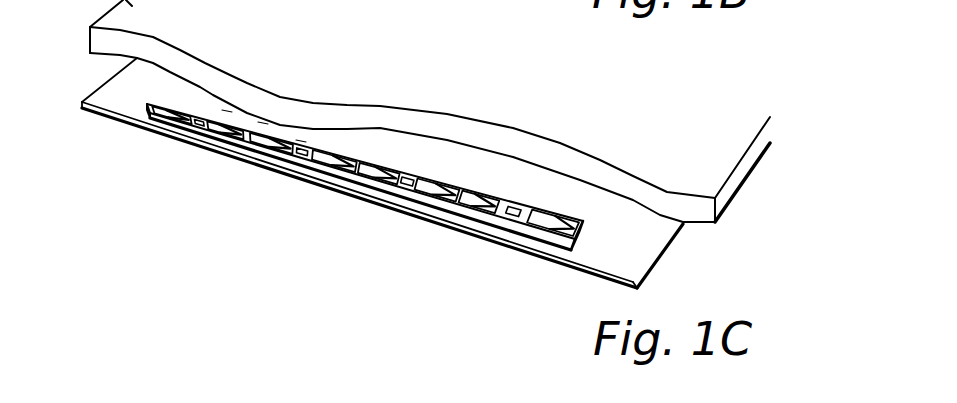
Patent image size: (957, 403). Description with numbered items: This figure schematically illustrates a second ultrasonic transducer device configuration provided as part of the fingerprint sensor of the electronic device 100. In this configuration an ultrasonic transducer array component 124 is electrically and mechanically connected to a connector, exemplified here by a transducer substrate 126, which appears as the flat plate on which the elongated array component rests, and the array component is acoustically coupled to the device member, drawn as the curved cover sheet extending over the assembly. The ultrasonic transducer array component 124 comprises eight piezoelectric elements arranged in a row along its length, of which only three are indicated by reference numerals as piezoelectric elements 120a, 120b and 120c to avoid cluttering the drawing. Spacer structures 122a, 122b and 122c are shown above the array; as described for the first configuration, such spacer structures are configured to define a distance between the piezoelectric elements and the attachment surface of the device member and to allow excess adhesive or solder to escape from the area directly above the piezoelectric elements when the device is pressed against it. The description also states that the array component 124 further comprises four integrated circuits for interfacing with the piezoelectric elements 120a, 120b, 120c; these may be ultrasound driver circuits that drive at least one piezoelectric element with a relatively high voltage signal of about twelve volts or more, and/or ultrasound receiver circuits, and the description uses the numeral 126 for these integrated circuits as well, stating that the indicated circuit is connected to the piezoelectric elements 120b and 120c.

The electronic device 100 is at (622, 96).
The first piezoelectric element 120a is at (227, 108).
The second piezoelectric element 120b is at (262, 124).
The third piezoelectric element 120c is at (340, 156).
The spacer structure 122a is at (227, 108).
The spacer structure 122b is at (262, 124).
The spacer structure 122c is at (297, 145).
The ultrasonic transducer array component 124 is at (392, 199).
The transducer substrate 126 is at (487, 236).